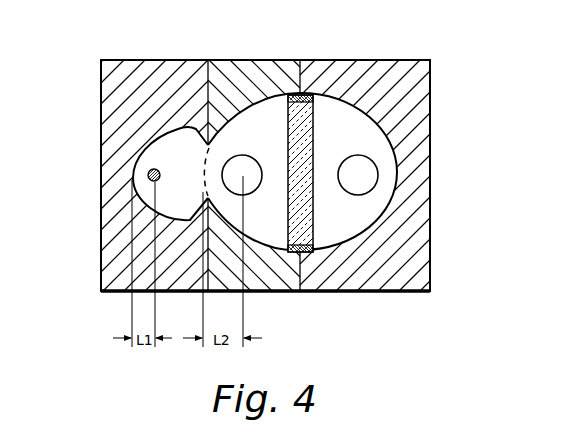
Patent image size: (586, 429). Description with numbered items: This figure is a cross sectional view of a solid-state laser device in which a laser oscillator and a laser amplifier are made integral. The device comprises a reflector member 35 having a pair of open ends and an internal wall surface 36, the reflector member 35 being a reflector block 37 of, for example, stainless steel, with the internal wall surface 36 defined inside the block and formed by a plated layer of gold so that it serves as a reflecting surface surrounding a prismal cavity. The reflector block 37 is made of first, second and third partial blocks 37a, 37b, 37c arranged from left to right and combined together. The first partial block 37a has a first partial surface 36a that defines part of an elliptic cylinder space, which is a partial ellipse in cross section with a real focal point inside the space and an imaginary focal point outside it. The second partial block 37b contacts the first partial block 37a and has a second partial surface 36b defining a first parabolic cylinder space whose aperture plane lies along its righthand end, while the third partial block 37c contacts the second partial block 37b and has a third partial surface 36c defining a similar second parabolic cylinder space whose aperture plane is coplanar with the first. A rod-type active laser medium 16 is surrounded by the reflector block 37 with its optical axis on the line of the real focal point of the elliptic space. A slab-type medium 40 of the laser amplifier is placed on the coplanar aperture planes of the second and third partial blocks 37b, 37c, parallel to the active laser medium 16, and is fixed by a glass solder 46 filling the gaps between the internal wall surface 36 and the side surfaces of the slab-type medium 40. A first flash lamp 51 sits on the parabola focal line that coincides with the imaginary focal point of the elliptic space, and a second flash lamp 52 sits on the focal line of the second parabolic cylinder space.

The active laser medium 16 is at (159, 171).
The reflector member 35 is at (308, 152).
The internal wall surface 36 is at (261, 209).
The first partial surface 36a is at (132, 173).
The second partial surface 36b is at (271, 242).
The third partial surface 36c is at (348, 242).
The reflector block 37 is at (300, 152).
The first partial block 37a is at (152, 60).
The second partial block 37b is at (262, 60).
The third partial block 37c is at (375, 60).
The slab-type medium 40 is at (319, 213).
The solder 46 is at (299, 253).
The first flash lamp 51 is at (246, 157).
The second flash lamp 52 is at (360, 155).